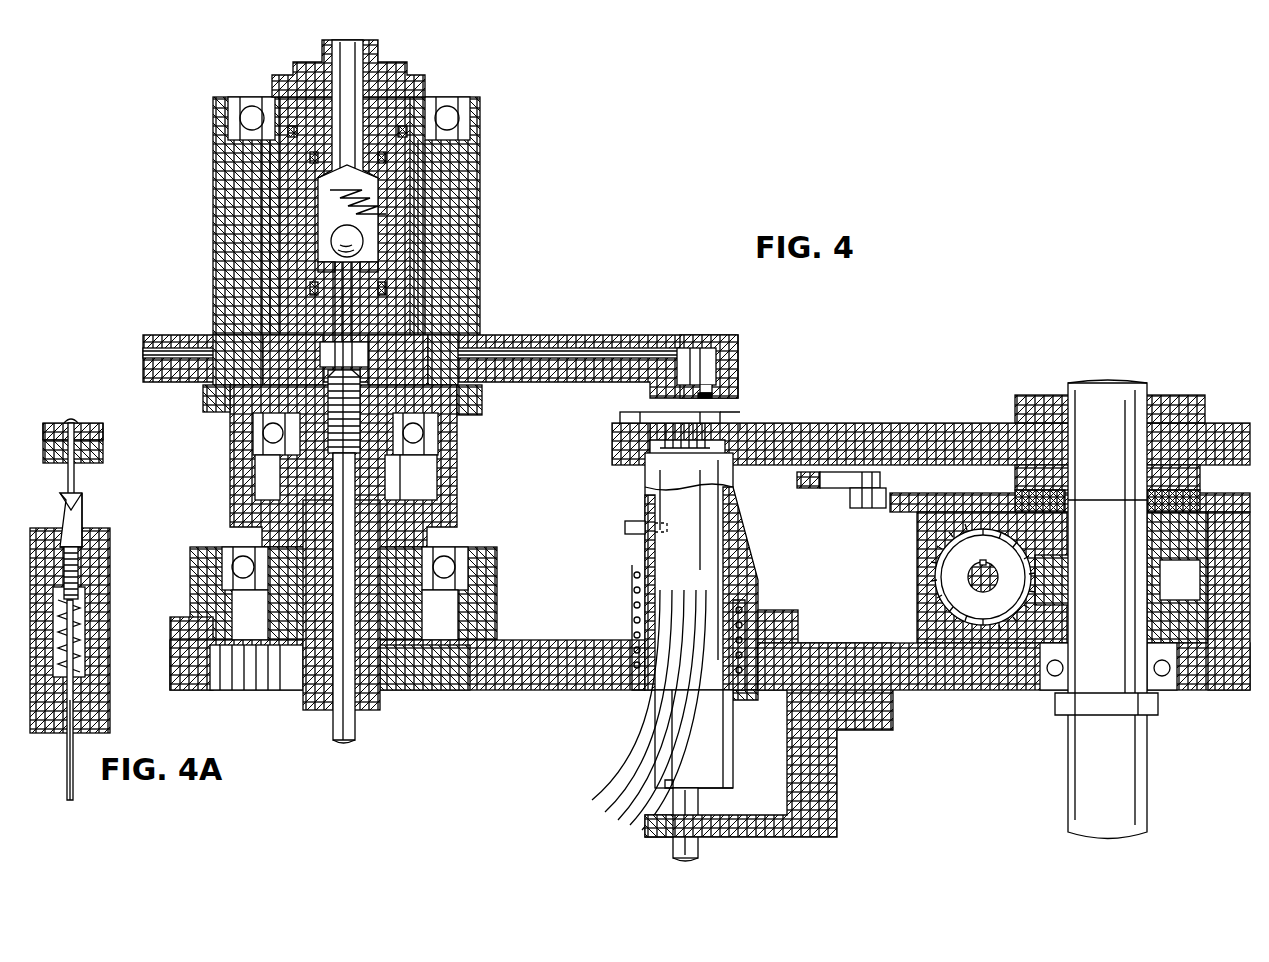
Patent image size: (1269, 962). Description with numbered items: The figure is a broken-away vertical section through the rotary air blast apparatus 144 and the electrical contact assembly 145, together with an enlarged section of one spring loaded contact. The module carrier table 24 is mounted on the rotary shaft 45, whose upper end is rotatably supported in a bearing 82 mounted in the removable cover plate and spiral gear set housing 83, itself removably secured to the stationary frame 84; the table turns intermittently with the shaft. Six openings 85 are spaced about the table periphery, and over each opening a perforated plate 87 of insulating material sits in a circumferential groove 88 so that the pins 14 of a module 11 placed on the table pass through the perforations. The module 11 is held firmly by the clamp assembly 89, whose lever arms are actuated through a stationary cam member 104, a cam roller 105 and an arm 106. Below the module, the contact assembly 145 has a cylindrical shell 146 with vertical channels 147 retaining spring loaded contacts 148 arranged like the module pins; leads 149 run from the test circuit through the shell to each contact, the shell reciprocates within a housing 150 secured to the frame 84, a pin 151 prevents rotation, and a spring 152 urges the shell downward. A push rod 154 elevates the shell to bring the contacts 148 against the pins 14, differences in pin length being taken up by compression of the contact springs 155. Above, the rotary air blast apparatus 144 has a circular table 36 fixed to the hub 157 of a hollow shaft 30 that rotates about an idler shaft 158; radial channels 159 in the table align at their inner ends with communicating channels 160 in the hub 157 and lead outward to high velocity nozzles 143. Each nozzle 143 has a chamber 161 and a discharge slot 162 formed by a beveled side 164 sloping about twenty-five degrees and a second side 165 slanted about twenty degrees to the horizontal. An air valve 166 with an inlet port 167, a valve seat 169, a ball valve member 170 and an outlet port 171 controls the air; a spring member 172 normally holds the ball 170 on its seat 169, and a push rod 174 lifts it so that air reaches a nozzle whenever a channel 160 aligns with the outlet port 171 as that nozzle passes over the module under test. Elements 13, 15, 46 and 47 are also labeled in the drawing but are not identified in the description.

In FIG. 4, the module 11 is at (665, 415).
In FIG. 4A, the upper block 13 is at (50, 423).
In FIG. 4, the pins 14 is at (660, 466).
In FIG. 4A, the pins 14 is at (76, 490).
In FIG. 4A, the upper block portion 15 is at (90, 423).
In FIG. 4, the module carrier table 24 is at (983, 423).
In FIG. 4, the hollow shaft 30 is at (392, 668).
In FIG. 4, the circular table 36 is at (600, 345).
In FIG. 4, the rotary shaft 45 is at (1078, 770).
In FIG. 4, the bearing block 46 is at (1062, 598).
In FIG. 4, the gear 47 is at (982, 578).
In FIG. 4, the bearing 82 is at (1052, 696).
In FIG. 4, the removable cover plate and spiral gear set housing 83 is at (1192, 686).
In FIG. 4, the stationary support member or frame 84 is at (1222, 686).
In FIG. 4, the openings 85 is at (652, 450).
In FIG. 4, the perforated plate 87 is at (625, 430).
In FIG. 4A, the perforated plate 87 is at (100, 457).
In FIG. 4, the circumferential groove 88 is at (745, 421).
In FIG. 4, the clamp assembly 89 is at (674, 437).
In FIG. 4, the stationary cam member 104 is at (908, 500).
In FIG. 4, the cam roller 105 is at (857, 510).
In FIG. 4, the arm 106 is at (822, 490).
In FIG. 4, the high velocity air nozzle 143 is at (724, 347).
In FIG. 4, the rotary air blast apparatus 144 is at (389, 189).
In FIG. 4, the electrical contact assembly 145 is at (673, 657).
In FIG. 4, the cylindrical shell 146 is at (733, 490).
In FIG. 4A, the cylindrical shell 146 is at (105, 632).
In FIG. 4A, the vertical channels 147 is at (62, 541).
In FIG. 4A, the spring loaded contacts 148 is at (85, 530).
In FIG. 4, the leads 149 is at (680, 730).
In FIG. 4A, the leads 149 is at (67, 832).
In FIG. 4, the housing 150 is at (748, 548).
In FIG. 4, the pin 151 is at (625, 533).
In FIG. 4, the spring 152 is at (745, 600).
In FIG. 4, the push rod 154 is at (680, 846).
In FIG. 4A, the contact springs 155 is at (90, 680).
In FIG. 4, the hub 157 is at (470, 285).
In FIG. 4, the idler shaft 158 is at (380, 700).
In FIG. 4, the radial channels 159 is at (143, 352).
In FIG. 4, the communicating channels 160 is at (470, 398).
In FIG. 4, the chamber 161 is at (680, 350).
In FIG. 4, the discharge slot 162 is at (712, 386).
In FIG. 4, the beveled side 164 is at (699, 366).
In FIG. 4, the second side 165 is at (704, 396).
In FIG. 4, the air valve 166 is at (436, 68).
In FIG. 4, the inlet port 167 is at (378, 47).
In FIG. 4, the valve seat 169 is at (318, 268).
In FIG. 4, the ball valve member 170 is at (358, 236).
In FIG. 4, the outlet port 171 is at (455, 345).
In FIG. 4, the spring member 172 is at (318, 208).
In FIG. 4, the push rod 174 is at (356, 735).